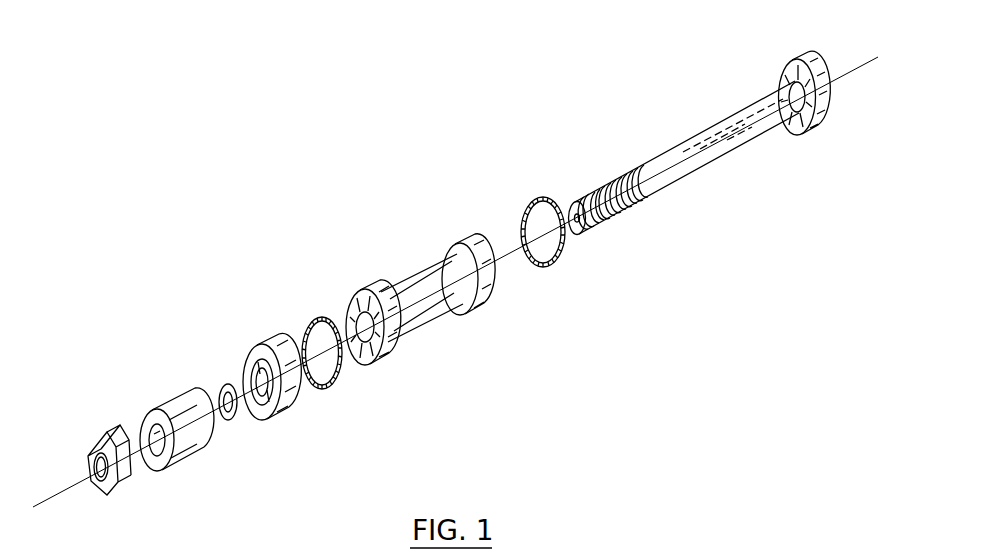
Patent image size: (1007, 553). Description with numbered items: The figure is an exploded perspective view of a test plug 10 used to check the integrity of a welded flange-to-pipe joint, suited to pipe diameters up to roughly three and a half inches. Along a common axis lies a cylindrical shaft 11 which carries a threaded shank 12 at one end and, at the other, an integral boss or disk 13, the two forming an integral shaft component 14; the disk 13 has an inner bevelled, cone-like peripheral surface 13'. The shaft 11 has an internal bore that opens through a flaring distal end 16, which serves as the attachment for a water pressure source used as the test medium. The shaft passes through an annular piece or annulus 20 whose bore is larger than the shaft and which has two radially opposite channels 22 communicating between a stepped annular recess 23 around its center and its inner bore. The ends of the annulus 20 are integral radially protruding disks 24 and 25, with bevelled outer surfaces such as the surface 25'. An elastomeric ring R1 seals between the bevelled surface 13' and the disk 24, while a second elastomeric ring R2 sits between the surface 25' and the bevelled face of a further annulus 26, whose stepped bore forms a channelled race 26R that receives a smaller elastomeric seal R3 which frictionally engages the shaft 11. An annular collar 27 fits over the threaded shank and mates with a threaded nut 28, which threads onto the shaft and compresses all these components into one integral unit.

The test plug 10 is at (560, 142).
The cylindrical shaft 11 is at (672, 153).
The threaded shank 12 is at (637, 207).
The integral boss, plug or disk 13 is at (819, 71).
The inner bevelled or truncated cone-like peripheral surface 13' is at (788, 36).
The integral shaft component 14 is at (722, 120).
The flaring outer or distal end 16 is at (583, 233).
The annular piece or annulus 20 is at (425, 262).
The radially disposed channels 22 is at (423, 285).
The stepped annular recess 23 is at (437, 313).
The radially protruding disk 24 is at (492, 287).
The radially protruding disk 25 is at (378, 335).
The outer truncated annular surface 25' is at (335, 278).
The annulus 26 is at (272, 343).
The channelled race 26R is at (273, 403).
The annular collar 27 is at (185, 398).
The threaded nut 28 is at (107, 432).
The elastomeric annular ring R1 is at (528, 208).
The elastomeric annular ring R2 is at (330, 380).
The elastomeric annular seal R3 is at (232, 420).